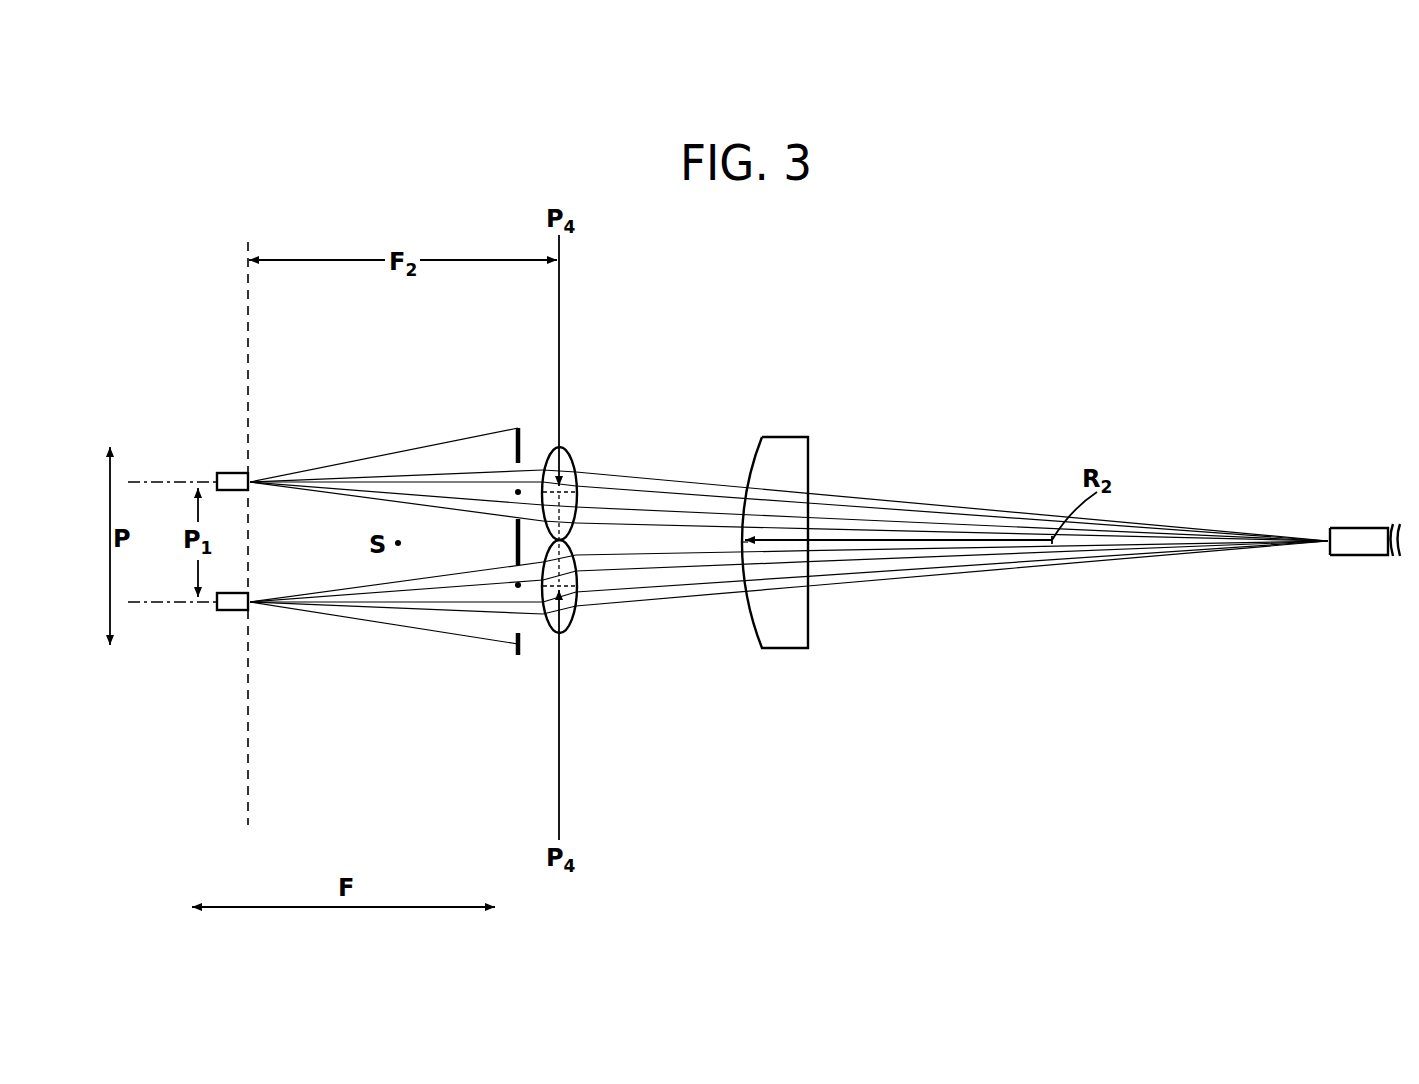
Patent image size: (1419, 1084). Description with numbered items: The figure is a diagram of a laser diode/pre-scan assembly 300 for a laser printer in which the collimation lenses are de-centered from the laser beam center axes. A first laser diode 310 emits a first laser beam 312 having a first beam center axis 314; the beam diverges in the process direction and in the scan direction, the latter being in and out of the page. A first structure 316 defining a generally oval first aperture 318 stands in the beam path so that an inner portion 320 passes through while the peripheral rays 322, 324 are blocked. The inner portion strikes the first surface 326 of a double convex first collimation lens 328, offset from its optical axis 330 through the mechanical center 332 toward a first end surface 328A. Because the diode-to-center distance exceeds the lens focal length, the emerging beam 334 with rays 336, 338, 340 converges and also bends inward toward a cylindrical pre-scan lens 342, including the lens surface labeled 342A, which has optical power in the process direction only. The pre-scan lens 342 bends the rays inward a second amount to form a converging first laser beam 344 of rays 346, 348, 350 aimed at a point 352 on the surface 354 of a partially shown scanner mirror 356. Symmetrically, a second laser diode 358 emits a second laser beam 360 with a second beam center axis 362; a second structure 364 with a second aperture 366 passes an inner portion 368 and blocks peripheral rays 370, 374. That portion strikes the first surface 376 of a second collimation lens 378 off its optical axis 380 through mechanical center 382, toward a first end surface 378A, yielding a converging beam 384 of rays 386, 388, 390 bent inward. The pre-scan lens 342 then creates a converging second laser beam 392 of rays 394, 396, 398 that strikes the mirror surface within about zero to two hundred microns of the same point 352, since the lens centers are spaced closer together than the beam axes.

The laser diode/pre-scan assembly 300 is at (297, 227).
The first laser diode 310 is at (228, 471).
The first laser beam 312 is at (380, 448).
The first beam center axis 314 is at (353, 480).
The first structure 316 is at (515, 463).
The first aperture 318 is at (518, 490).
The inner portion of the first laser beam 320 is at (544, 468).
The ray of the peripheral portion of the first laser beam 322 is at (288, 472).
The ray of the peripheral portion of the first laser beam 324 is at (347, 503).
The first surface of the first collimation lens 326 is at (532, 452).
The first collimation lens 328 is at (582, 452).
The first end surface of the first lens 328A is at (563, 443).
The optical axis of the first collimation lens 330 is at (563, 539).
The mechanical center of the first collimation lens 332 is at (556, 493).
The converging first laser beam 334 is at (620, 452).
The ray of the converging first laser beam 336 is at (628, 490).
The ray of the converging first laser beam 338 is at (680, 497).
The ray of the converging first laser beam 340 is at (708, 523).
The pre-scan lens 342 is at (822, 445).
The curved surface of focusing lens 342A is at (725, 540).
The converging first laser beam 344 is at (1045, 497).
The ray of the converging first laser beam 346 is at (895, 498).
The ray of the converging first laser beam 348 is at (938, 517).
The ray of the converging first laser beam 350 is at (983, 528).
The point on the scanner mirror surface 352 is at (1325, 537).
The surface of the scanner mirror 354 is at (1325, 548).
The scanner mirror 356 is at (1362, 525).
The second laser diode 358 is at (222, 612).
The second laser beam 360 is at (340, 628).
The second beam center axis 362 is at (390, 612).
The second structure 364 is at (518, 634).
The second aperture 366 is at (525, 618).
The inner portion of the second laser beam 368 is at (518, 588).
The ray of the peripheral portion of the second laser beam 370 is at (340, 582).
The ray of the peripheral portion of the second laser beam 374 is at (297, 612).
The first surface of the second collimation lens 376 is at (537, 632).
The second collimation lens 378 is at (572, 632).
The first end surface of the second lens 378A is at (568, 637).
The optical axis of the second collimation lens 380 is at (553, 582).
The mechanical center of the second collimation lens 382 is at (585, 615).
The converging second laser beam 384 is at (622, 625).
The ray of the converging second laser beam 386 is at (643, 590).
The ray of the converging second laser beam 388 is at (688, 587).
The ray of the converging second laser beam 390 is at (722, 603).
The converging second laser beam 392 is at (1102, 578).
The ray of the converging second laser beam 394 is at (847, 593).
The ray of the converging second laser beam 396 is at (913, 570).
The ray of the converging second laser beam 398 is at (1005, 555).